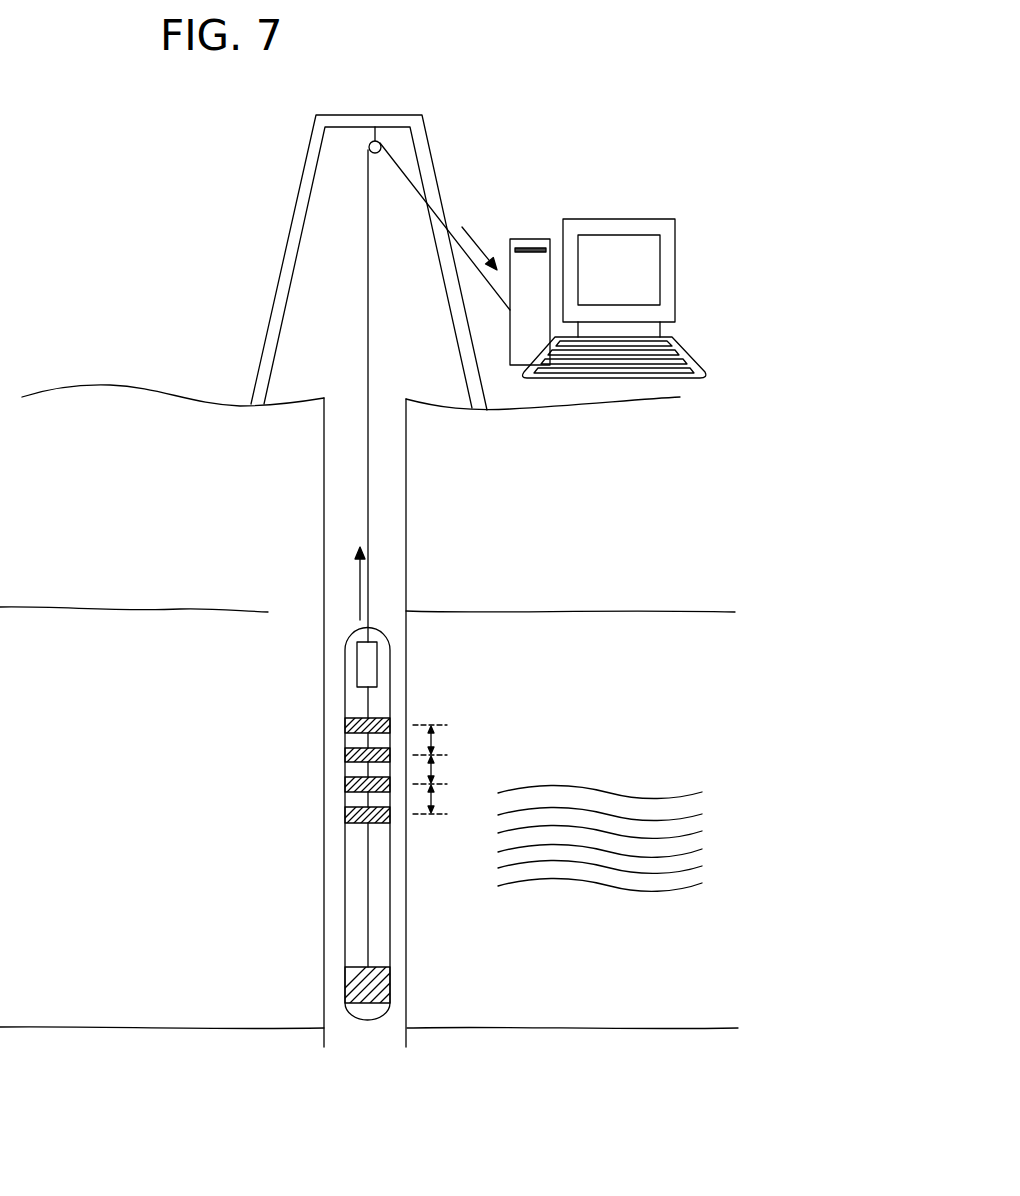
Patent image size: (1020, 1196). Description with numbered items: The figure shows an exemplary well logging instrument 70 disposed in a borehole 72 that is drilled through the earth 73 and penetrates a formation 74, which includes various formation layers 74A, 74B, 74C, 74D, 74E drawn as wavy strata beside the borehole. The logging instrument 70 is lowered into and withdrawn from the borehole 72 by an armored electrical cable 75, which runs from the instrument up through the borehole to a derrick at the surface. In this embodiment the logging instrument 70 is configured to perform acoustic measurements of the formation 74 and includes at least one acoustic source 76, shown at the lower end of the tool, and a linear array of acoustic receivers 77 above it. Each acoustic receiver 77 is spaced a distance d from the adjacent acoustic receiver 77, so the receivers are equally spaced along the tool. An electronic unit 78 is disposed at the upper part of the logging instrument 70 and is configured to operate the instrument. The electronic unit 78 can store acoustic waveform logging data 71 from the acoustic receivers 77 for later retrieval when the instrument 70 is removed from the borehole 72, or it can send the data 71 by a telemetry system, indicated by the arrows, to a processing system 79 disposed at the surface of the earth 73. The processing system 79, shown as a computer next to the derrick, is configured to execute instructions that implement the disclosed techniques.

The well logging instrument 70 is at (333, 626).
The acoustic waveform logging data 71 is at (472, 238).
The borehole 72 is at (343, 412).
The earth 73 is at (105, 475).
The formation 74 is at (105, 674).
The formation layer 74A is at (700, 800).
The formation layer 74B is at (698, 822).
The formation layer 74C is at (698, 841).
The formation layer 74D is at (700, 858).
The formation layer 74E is at (695, 875).
The armored electrical cable 75 is at (368, 497).
The acoustic source 76 is at (345, 990).
The acoustic receivers 77 is at (345, 727).
The electronic unit 78 is at (357, 663).
The processing system 79 is at (527, 238).
The distance d is at (433, 740).